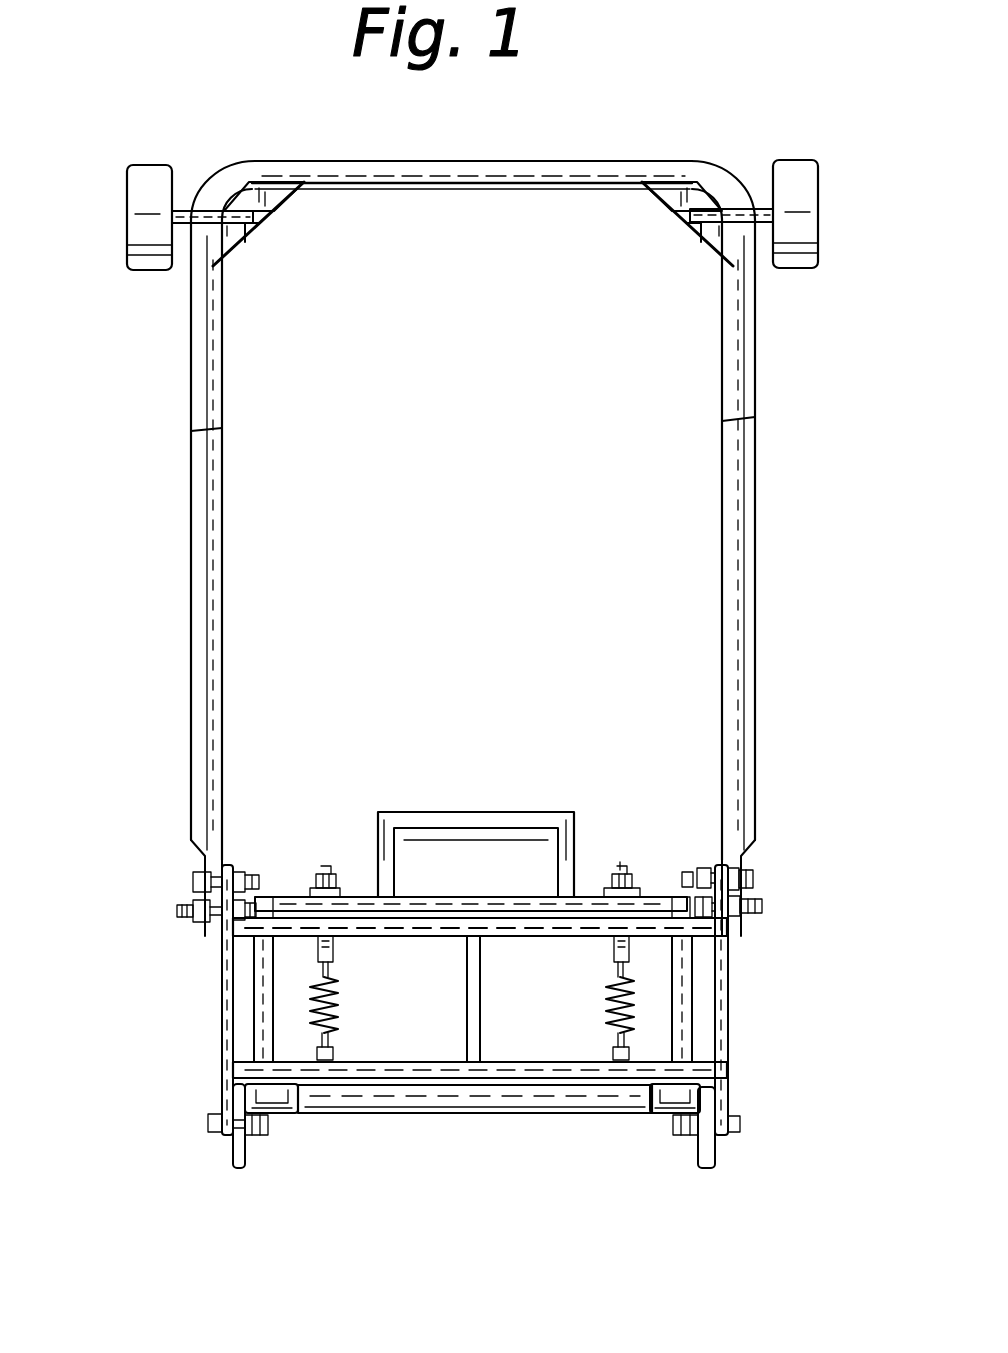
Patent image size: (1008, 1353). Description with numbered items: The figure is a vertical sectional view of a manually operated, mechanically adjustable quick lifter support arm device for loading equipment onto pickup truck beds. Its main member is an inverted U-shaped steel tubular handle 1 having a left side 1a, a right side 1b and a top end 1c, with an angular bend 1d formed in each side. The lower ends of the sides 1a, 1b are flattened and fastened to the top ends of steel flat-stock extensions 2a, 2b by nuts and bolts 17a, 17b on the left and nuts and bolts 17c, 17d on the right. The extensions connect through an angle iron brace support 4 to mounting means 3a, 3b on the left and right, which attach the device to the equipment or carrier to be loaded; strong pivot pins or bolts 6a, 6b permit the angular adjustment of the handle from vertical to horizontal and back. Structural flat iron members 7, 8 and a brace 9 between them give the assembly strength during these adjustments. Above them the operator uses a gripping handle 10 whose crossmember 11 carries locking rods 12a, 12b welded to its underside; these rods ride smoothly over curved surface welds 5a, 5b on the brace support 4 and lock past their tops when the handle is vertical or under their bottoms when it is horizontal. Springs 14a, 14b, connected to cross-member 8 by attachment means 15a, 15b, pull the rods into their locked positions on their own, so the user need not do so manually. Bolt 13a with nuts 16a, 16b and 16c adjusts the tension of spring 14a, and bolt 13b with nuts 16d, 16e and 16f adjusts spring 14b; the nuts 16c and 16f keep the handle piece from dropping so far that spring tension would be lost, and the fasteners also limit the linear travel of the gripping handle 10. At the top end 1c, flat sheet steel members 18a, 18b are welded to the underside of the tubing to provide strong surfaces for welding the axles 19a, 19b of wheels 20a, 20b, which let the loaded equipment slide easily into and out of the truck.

The inverted U-shaped steel tubular handle 1 is at (760, 476).
The left side of the handle 1a is at (198, 556).
The right side of the handle 1b is at (748, 524).
The top end of the handle 1c is at (462, 176).
The angular bend 1d is at (210, 428).
The left flat-stock extension 2a is at (222, 990).
The right flat-stock extension 2b is at (728, 986).
The left mounting means 3a is at (237, 1148).
The right mounting means 3b is at (708, 1160).
The angle iron brace support 4 is at (460, 1102).
The left curved surface weld 5a is at (284, 1102).
The right curved surface weld 5b is at (656, 1104).
The left pivot pin 6a is at (208, 1119).
The right pivot pin 6b is at (740, 1122).
The structural flat iron member 7 is at (246, 940).
The structural flat iron cross-member 8 is at (728, 1061).
The brace 9 is at (482, 968).
The gripping handle 10 is at (487, 814).
The crossmember 11 is at (464, 844).
The left locking rod 12a is at (257, 1011).
The right locking rod 12b is at (690, 1022).
The left tension adjusting bolt 13a is at (335, 884).
The right tension adjusting bolt 13b is at (607, 880).
The left spring 14a is at (338, 1005).
The right spring 14b is at (606, 1005).
The left spring attachment means 15a is at (334, 1052).
The right spring attachment means 15b is at (614, 1052).
The tension adjusting nut 16a is at (308, 895).
The tension adjusting nut 16b is at (290, 895).
The stop nut 16c is at (333, 942).
The tension adjusting nut 16d is at (636, 892).
The tension adjusting nut 16e is at (664, 896).
The stop nut 16f is at (620, 940).
The left nut and bolt 17a is at (196, 876).
The left nut and bolt 17b is at (178, 908).
The right nut and bolt 17c is at (750, 872).
The right nut and bolt 17d is at (757, 905).
The flat sheet steel member 18a is at (280, 198).
The flat sheet steel member 18b is at (656, 193).
The left wheel axle 19a is at (248, 242).
The right wheel axle 19b is at (706, 246).
The left wheel 20a is at (150, 268).
The right wheel 20b is at (820, 252).